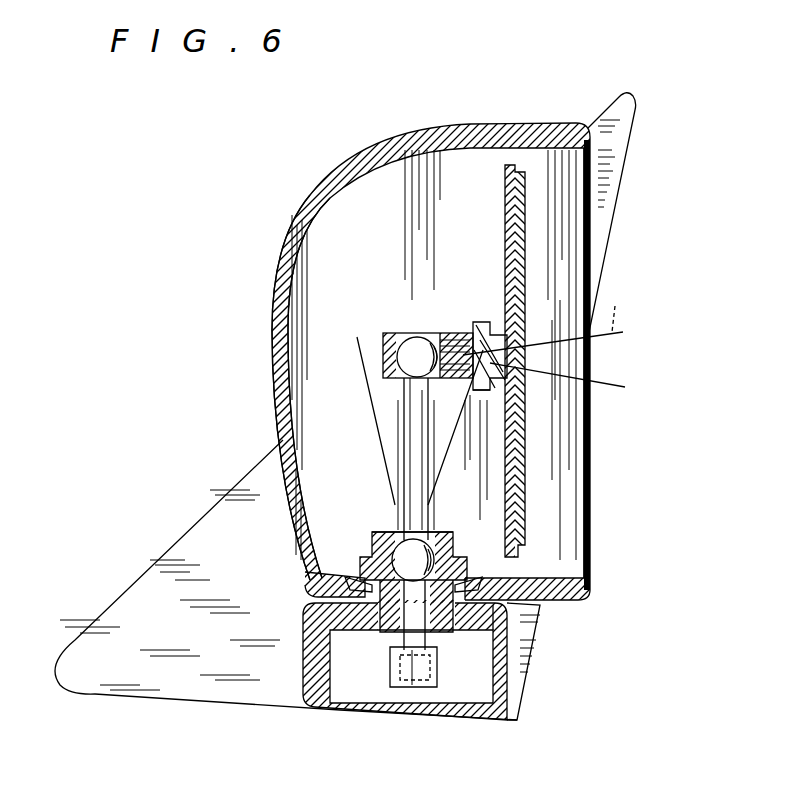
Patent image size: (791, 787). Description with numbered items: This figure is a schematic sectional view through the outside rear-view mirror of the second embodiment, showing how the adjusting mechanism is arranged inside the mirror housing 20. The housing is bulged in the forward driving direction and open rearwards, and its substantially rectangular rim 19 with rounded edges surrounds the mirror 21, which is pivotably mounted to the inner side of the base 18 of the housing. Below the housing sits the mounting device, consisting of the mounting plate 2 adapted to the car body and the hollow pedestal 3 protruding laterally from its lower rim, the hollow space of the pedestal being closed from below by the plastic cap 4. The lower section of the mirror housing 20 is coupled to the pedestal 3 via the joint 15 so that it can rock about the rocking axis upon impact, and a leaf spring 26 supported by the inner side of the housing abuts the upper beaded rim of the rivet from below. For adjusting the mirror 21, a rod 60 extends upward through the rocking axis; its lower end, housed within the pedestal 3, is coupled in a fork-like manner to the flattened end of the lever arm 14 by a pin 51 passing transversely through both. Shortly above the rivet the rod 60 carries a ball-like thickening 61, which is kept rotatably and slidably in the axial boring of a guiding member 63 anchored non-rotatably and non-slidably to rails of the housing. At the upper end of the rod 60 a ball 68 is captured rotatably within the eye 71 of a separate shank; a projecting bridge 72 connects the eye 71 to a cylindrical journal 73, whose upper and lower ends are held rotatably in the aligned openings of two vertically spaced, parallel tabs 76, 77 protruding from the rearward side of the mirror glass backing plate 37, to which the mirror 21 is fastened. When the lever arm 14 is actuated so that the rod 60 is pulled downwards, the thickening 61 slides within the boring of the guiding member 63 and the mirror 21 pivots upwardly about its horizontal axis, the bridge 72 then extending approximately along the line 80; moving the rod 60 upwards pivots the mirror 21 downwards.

The mounting plate 2 is at (630, 118).
The hollow pedestal 3 is at (515, 680).
The plastic cap 4 is at (455, 722).
The lever arm 14 is at (413, 685).
The joint 15 is at (446, 640).
The base 18 is at (272, 350).
The rim 19 is at (582, 124).
The mirror housing 20 is at (550, 119).
The mirror 21 is at (527, 268).
The leaf spring 26 is at (352, 612).
The mirror glass backing plate 37 is at (505, 224).
The pin 51 is at (392, 652).
The rod 60 is at (427, 513).
The ball-like thickening 61 is at (460, 566).
The guiding member 63 is at (440, 532).
The ball 68 is at (410, 376).
The eye 71 is at (398, 337).
The bridge 72 is at (455, 378).
The cylindrical journal 73 is at (455, 345).
The tab 76 is at (492, 322).
The tab 77 is at (490, 392).
The line 80 is at (557, 339).